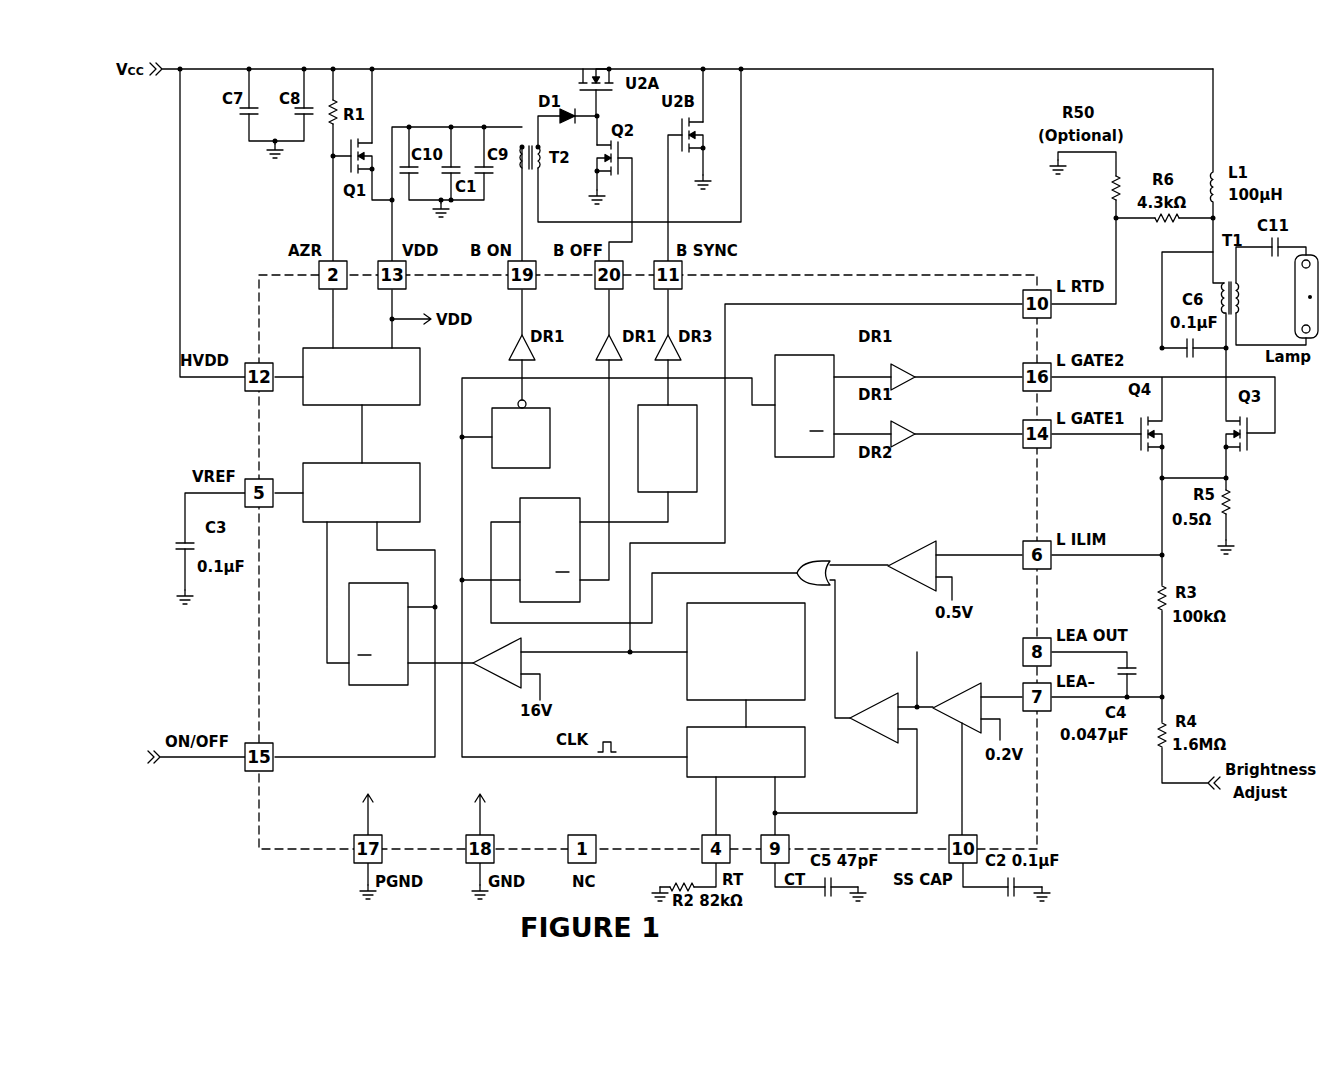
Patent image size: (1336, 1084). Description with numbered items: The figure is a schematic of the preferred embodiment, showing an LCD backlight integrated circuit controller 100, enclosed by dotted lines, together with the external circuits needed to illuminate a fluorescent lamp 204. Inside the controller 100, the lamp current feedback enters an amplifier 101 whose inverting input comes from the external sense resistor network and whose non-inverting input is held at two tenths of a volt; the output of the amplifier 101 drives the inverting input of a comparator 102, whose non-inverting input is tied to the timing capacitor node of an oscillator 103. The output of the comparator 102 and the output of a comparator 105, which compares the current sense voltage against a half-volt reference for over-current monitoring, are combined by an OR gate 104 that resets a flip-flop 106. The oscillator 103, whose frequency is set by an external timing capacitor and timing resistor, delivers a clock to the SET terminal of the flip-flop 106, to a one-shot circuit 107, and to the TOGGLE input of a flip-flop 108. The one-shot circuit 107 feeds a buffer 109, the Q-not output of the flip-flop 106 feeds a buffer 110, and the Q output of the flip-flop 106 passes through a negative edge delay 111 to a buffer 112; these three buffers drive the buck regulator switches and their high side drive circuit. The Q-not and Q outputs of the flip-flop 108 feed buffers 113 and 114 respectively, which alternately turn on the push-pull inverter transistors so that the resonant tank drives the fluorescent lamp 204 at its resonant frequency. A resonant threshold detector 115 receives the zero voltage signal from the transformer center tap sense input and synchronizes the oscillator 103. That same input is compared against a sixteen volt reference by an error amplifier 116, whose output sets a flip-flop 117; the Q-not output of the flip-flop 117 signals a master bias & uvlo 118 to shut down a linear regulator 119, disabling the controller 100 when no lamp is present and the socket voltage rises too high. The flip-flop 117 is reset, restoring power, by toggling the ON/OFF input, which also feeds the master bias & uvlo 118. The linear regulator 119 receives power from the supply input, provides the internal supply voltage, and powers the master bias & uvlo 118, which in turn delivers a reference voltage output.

The integrated circuit controller 100 is at (878, 275).
The amplifier 101 is at (955, 692).
The comparator 102 is at (872, 708).
The oscillator 103 is at (808, 758).
The OR gate 104 is at (816, 562).
The comparator 105 is at (903, 553).
The flip-flop 106 is at (569, 498).
The one-shot circuit 107 is at (550, 413).
The flip-flop 108 is at (823, 354).
The buffer 109 is at (504, 356).
The buffer 110 is at (603, 341).
The negative edge delay 111 is at (698, 414).
The buffer 112 is at (656, 346).
The buffer 113 is at (912, 428).
The buffer 114 is at (912, 370).
The resonant threshold detector 115 is at (682, 702).
The error amplifier 116 is at (495, 677).
The flip-flop 117 is at (366, 584).
The master bias & uvlo 118 is at (332, 457).
The linear regulator 119 is at (401, 408).
The fluorescent lamp 204 is at (1293, 309).